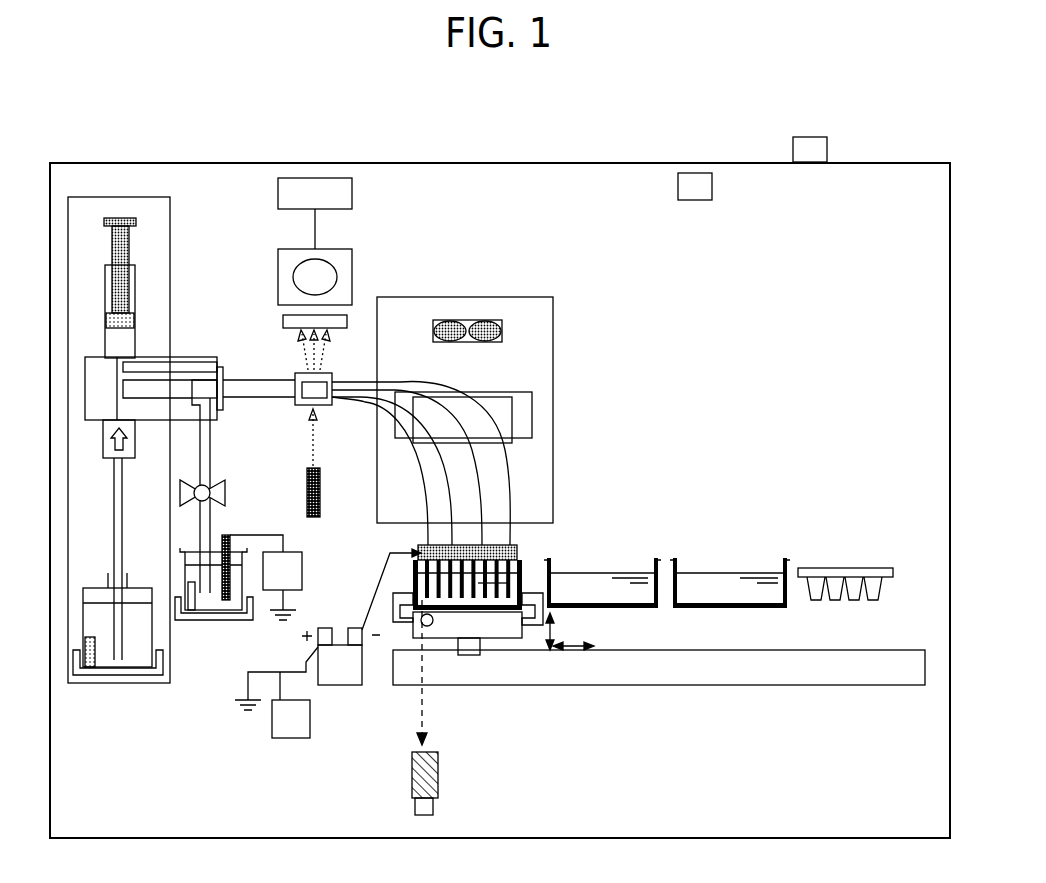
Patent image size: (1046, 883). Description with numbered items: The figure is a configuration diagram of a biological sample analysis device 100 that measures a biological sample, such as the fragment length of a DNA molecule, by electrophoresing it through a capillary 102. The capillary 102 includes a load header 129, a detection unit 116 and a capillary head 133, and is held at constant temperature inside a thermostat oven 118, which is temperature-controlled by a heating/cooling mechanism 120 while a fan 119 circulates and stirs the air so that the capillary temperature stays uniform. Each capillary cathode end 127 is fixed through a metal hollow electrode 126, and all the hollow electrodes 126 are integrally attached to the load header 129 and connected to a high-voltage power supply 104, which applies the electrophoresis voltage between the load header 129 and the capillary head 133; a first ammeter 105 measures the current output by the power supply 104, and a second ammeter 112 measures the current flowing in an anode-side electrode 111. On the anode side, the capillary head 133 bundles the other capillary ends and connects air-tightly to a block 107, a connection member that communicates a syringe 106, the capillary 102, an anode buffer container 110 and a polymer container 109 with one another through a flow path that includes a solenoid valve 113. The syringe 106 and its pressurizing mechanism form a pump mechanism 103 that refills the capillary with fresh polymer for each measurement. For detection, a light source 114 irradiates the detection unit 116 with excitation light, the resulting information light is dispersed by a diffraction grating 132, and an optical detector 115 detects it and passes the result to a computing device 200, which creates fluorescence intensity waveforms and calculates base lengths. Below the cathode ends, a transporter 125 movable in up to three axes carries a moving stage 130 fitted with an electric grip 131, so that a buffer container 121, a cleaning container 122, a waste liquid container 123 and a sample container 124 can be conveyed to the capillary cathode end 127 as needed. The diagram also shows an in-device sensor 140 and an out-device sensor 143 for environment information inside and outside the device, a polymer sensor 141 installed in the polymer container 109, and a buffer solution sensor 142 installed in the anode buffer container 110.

The biological sample analysis device 100 is at (595, 173).
The capillary 102 is at (358, 387).
The pump mechanism 103 is at (158, 232).
The high-voltage power supply 104 is at (338, 686).
The first ammeter 105 is at (291, 739).
The syringe 106 is at (130, 316).
The block 107 is at (150, 367).
The polymer container 109 is at (140, 650).
The anode buffer container 110 is at (225, 607).
The anode-side electrode 111 is at (218, 587).
The second ammeter 112 is at (302, 572).
The solenoid valve 113 is at (226, 492).
The light source 114 is at (318, 493).
The optical detector 115 is at (340, 270).
The detection unit 116 is at (298, 378).
The thermostat oven 118 is at (470, 304).
The fan 119 is at (493, 320).
The heating/cooling mechanism 120 is at (503, 392).
The buffer container 121 is at (468, 600).
The cleaning container 122 is at (616, 595).
The waste liquid container 123 is at (738, 595).
The sample container 124 is at (855, 600).
The transporter 125 is at (672, 684).
The hollow electrode 126 is at (438, 775).
The capillary cathode end 127 is at (433, 808).
The load header 129 is at (520, 545).
The moving stage 130 is at (470, 645).
The grip 131 is at (530, 593).
The diffraction grating 132 is at (283, 322).
The capillary head 133 is at (212, 388).
The in-device sensor 140 is at (712, 185).
The polymer sensor 141 is at (87, 665).
The buffer solution sensor 142 is at (188, 612).
The out-device sensor 143 is at (827, 148).
The computing device 200 is at (355, 189).